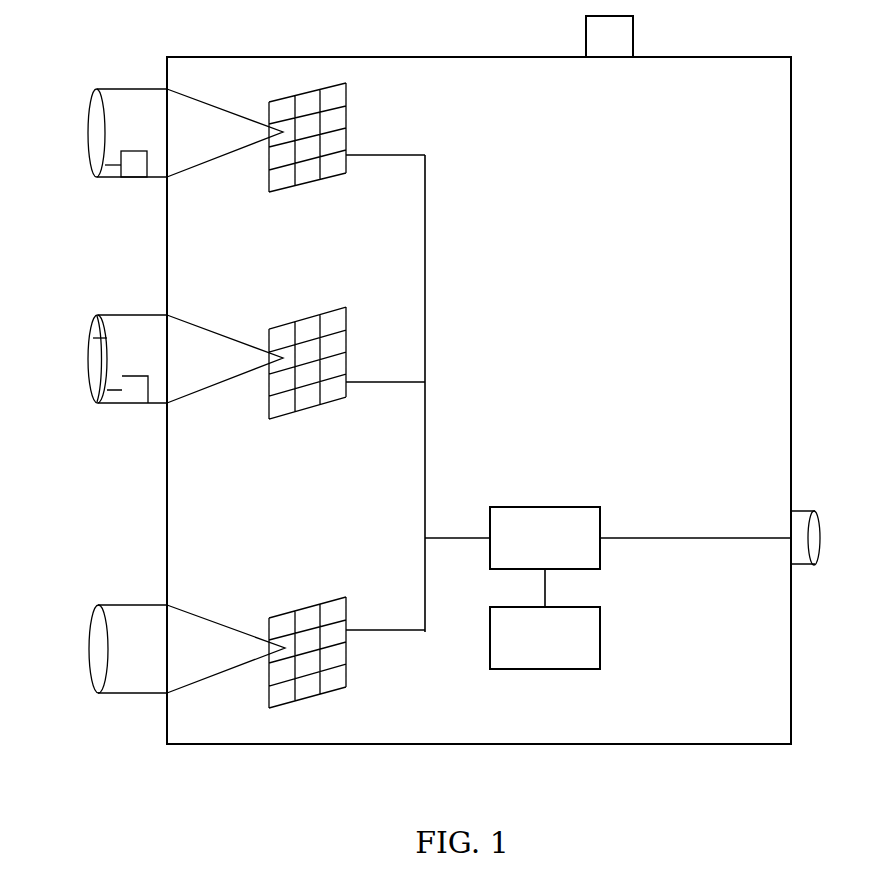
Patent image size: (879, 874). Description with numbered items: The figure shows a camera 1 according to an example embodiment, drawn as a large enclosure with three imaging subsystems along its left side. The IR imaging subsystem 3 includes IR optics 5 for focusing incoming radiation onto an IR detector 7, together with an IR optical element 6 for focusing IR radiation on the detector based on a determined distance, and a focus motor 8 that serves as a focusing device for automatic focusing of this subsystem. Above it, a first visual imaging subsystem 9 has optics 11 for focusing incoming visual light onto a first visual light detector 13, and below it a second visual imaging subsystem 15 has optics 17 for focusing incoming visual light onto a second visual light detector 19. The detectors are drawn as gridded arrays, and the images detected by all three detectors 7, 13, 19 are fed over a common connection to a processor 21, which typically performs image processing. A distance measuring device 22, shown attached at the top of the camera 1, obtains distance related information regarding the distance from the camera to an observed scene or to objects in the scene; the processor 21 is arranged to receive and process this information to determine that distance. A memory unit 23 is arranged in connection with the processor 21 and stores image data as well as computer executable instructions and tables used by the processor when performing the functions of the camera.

The camera 1 is at (708, 124).
The IR imaging subsystem 3 is at (165, 315).
The IR optics 5 is at (93, 374).
The IR optical element 6 is at (90, 341).
The IR detector 7 is at (338, 323).
The focus motor 8 is at (135, 396).
The first visual imaging subsystem 9 is at (165, 89).
The optics 11 is at (95, 150).
The first visual light detector 13 is at (338, 117).
The second visual imaging subsystem 15 is at (118, 605).
The optics 17 is at (122, 693).
The second visual light detector 19 is at (331, 682).
The processor 21 is at (532, 551).
The distance measuring device 22 is at (596, 49).
The memory unit 23 is at (532, 651).